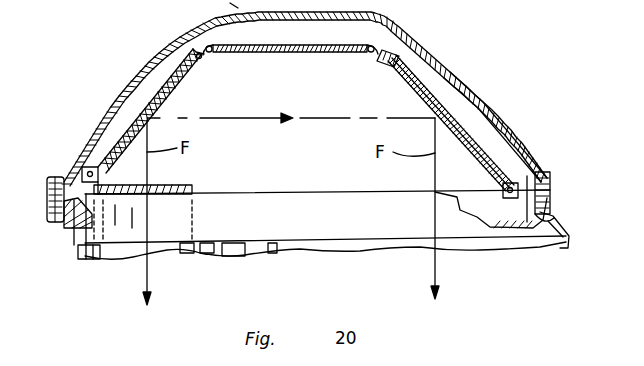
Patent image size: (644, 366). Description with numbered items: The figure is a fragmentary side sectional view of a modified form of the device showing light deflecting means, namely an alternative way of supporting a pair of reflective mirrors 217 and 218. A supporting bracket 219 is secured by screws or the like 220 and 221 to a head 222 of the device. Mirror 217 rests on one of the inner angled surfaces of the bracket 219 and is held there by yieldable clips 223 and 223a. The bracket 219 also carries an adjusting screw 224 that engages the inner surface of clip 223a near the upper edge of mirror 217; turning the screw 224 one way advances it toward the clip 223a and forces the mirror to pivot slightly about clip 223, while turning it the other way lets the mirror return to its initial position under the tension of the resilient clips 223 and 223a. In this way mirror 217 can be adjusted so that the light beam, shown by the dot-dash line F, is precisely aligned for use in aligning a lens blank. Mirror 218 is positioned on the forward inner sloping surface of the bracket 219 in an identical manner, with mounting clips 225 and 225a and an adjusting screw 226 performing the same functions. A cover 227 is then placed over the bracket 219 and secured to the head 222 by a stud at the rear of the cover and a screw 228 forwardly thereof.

The reflective mirror 217 is at (166, 93).
The reflective mirror 218 is at (410, 84).
The supporting bracket 219 is at (293, 44).
The screw 220 is at (78, 180).
The screw 221 is at (550, 202).
The head 222 is at (265, 219).
The yieldable clip 223 is at (100, 171).
The yieldable clip 223a is at (212, 54).
The adjusting screw 224 is at (186, 55).
The mounting clip 225 is at (513, 190).
The mounting clip 225a is at (377, 59).
The adjusting screw 226 is at (400, 51).
The cover 227 is at (483, 99).
The screw 228 is at (550, 177).